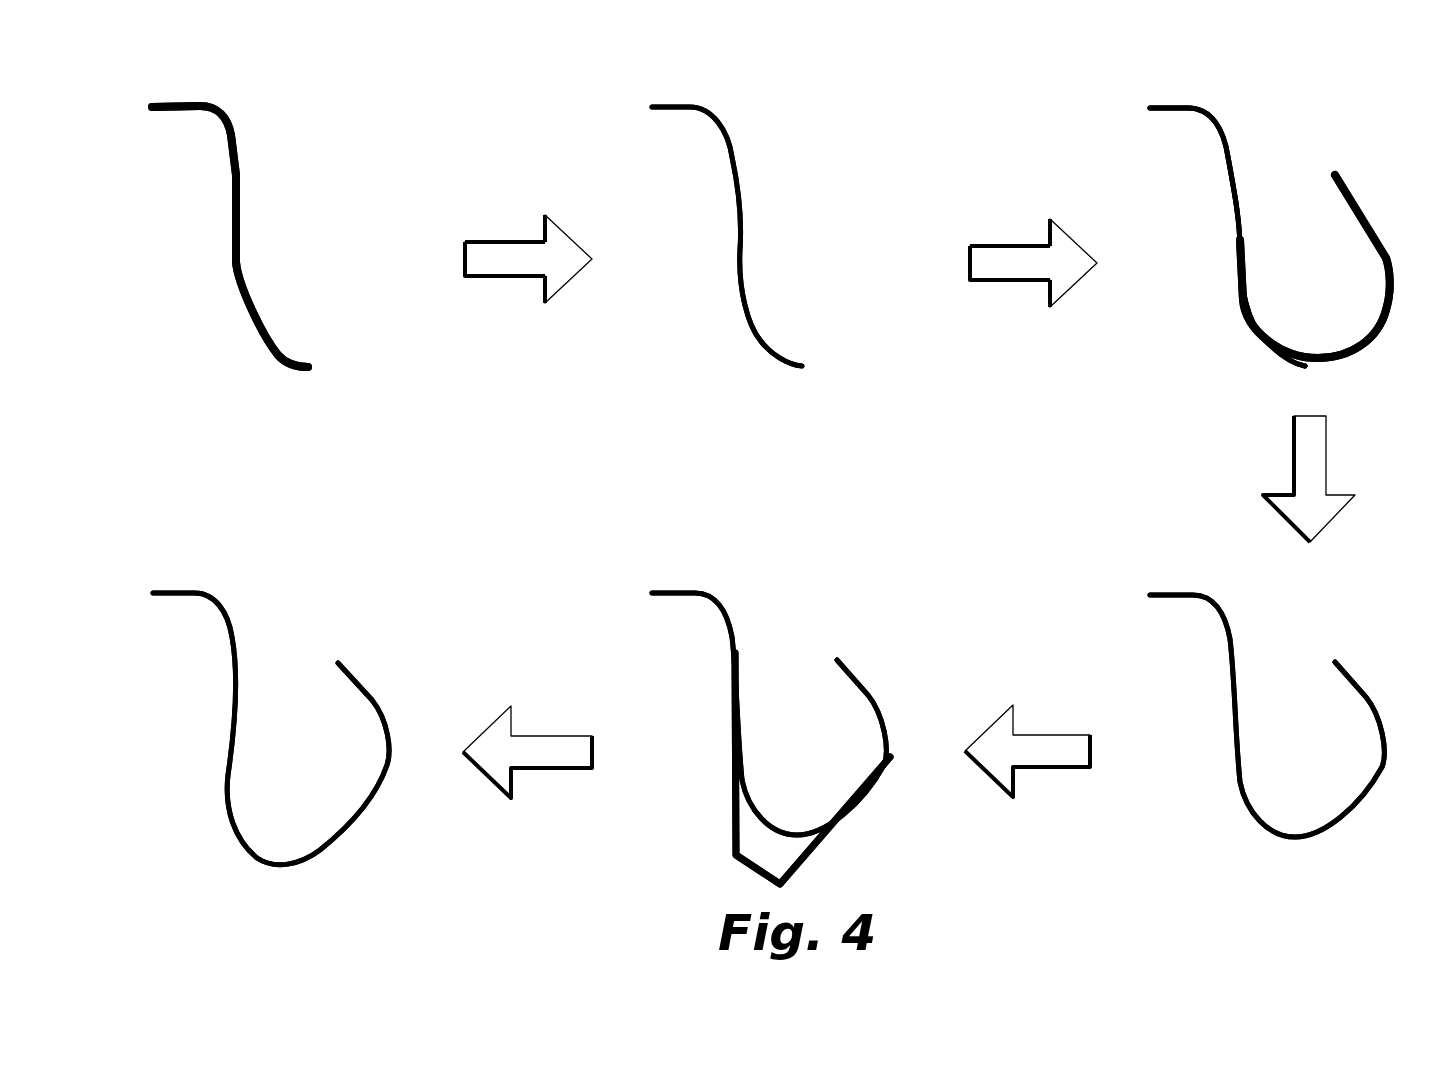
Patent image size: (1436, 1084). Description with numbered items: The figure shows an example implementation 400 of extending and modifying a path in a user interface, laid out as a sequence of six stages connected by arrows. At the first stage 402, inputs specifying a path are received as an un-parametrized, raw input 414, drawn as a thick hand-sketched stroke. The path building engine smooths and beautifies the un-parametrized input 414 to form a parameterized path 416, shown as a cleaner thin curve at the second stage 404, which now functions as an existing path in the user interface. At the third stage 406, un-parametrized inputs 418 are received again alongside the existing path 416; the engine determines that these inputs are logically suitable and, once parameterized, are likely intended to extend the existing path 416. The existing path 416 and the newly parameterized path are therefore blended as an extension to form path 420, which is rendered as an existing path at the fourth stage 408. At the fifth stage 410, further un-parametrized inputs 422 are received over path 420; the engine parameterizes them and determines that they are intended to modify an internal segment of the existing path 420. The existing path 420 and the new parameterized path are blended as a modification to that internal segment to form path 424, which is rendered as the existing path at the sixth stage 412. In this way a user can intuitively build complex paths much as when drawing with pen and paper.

The example implementation 400 is at (1330, 105).
The first stage 402 is at (206, 80).
The second stage 404 is at (646, 80).
The third stage 406 is at (1156, 80).
The fourth stage 408 is at (1159, 559).
The fifth stage 410 is at (663, 562).
The sixth stage 412 is at (225, 564).
The un-parametrized input 414 is at (235, 205).
The path 416 is at (737, 207).
The un-parametrized inputs 418 is at (1264, 322).
The path 420 is at (1239, 742).
The un-parametrized inputs 422 is at (833, 848).
The path 424 is at (358, 811).